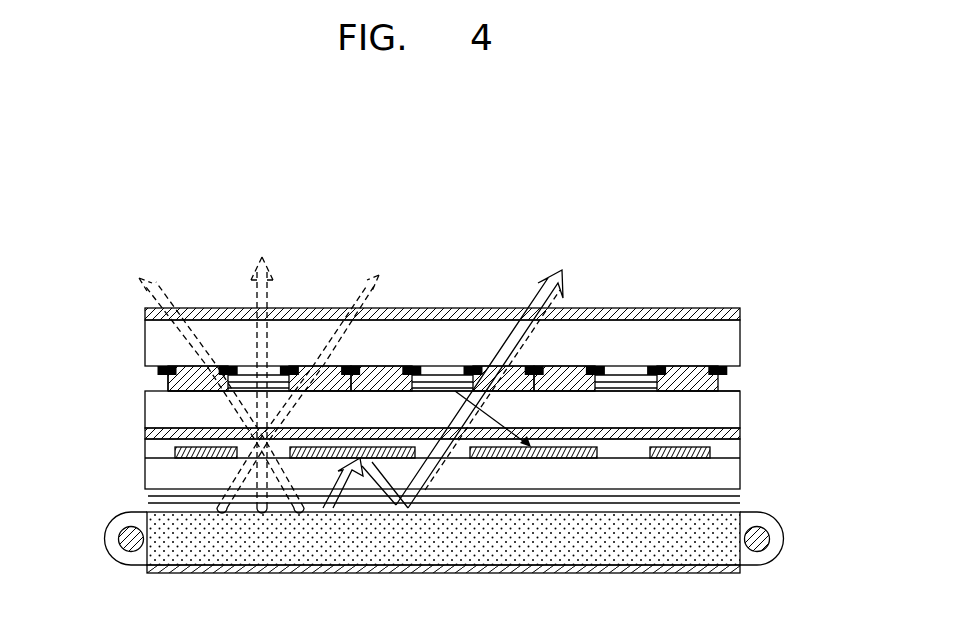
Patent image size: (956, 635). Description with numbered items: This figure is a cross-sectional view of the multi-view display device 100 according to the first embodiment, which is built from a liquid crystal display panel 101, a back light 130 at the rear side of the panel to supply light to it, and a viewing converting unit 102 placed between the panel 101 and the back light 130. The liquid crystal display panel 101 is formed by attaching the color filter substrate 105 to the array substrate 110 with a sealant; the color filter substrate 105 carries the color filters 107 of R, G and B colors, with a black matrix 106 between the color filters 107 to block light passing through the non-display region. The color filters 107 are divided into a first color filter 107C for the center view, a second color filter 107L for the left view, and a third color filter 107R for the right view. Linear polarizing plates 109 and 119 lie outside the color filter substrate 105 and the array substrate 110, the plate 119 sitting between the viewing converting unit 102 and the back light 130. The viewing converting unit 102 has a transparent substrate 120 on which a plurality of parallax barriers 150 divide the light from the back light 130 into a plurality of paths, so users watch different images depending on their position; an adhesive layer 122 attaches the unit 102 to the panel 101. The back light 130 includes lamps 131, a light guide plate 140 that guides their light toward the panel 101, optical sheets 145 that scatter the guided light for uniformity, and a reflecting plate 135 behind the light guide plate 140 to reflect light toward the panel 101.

The multi-view display device 100 is at (754, 291).
The liquid crystal display panel 101 is at (746, 320).
The viewing converting unit 102 is at (746, 437).
The color filter substrate 105 is at (145, 345).
The black matrix 106 is at (152, 368).
The color filters 107 is at (340, 196).
The third color filter 107R is at (207, 366).
The first color filter 107C is at (262, 366).
The second color filter 107L is at (322, 366).
The linear polarizing plate 109 is at (145, 313).
The array substrate 110 is at (150, 405).
The linear polarizing plate 119 is at (150, 432).
The substrate 120 is at (150, 480).
The adhesive layer 122 is at (165, 452).
The back light 130 is at (793, 503).
The lamps 131 is at (118, 539).
The reflecting plate 135 is at (643, 571).
The light guide plate 140 is at (722, 553).
The optical sheets 145 is at (152, 499).
The parallax barriers 150 is at (542, 456).